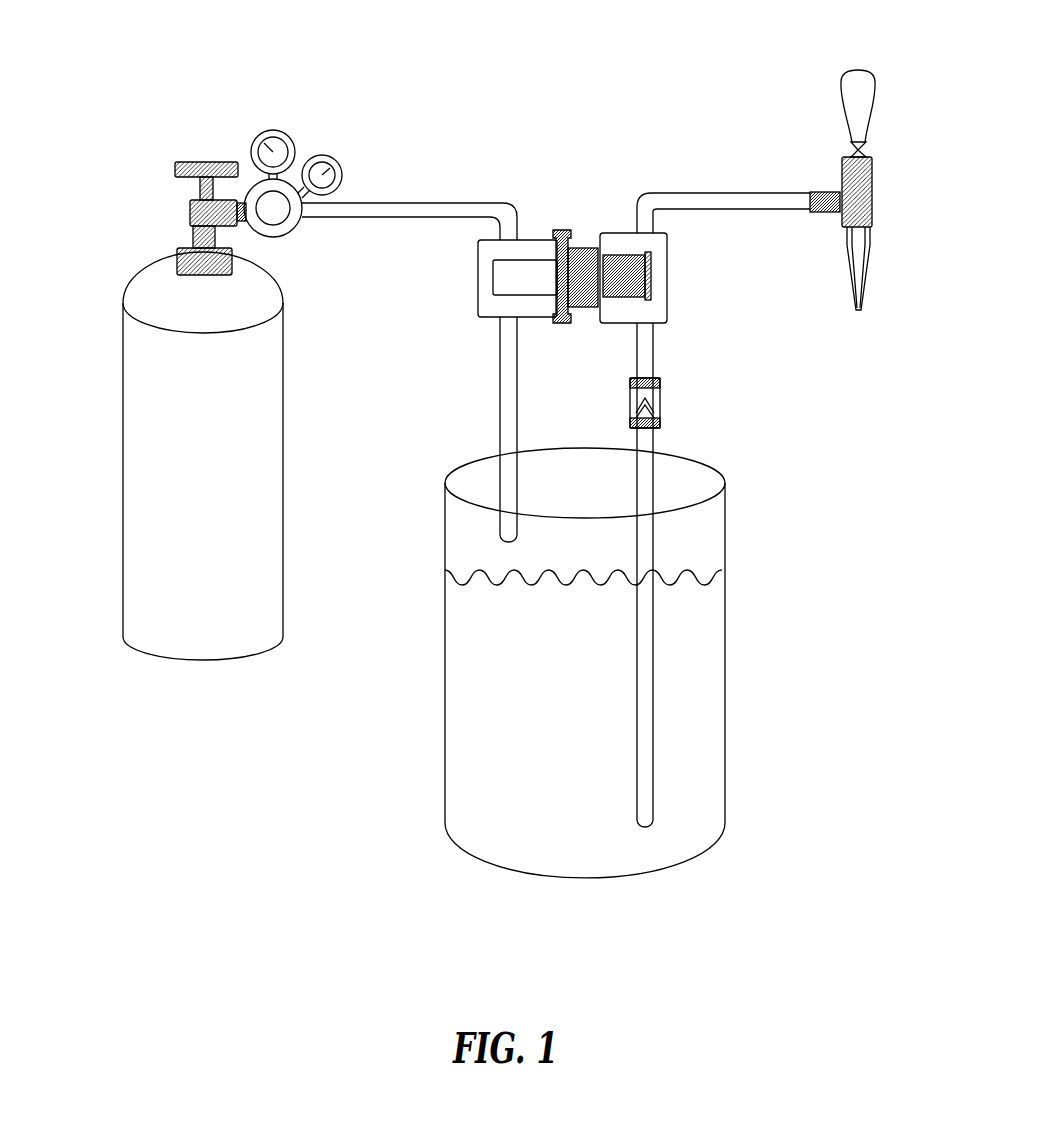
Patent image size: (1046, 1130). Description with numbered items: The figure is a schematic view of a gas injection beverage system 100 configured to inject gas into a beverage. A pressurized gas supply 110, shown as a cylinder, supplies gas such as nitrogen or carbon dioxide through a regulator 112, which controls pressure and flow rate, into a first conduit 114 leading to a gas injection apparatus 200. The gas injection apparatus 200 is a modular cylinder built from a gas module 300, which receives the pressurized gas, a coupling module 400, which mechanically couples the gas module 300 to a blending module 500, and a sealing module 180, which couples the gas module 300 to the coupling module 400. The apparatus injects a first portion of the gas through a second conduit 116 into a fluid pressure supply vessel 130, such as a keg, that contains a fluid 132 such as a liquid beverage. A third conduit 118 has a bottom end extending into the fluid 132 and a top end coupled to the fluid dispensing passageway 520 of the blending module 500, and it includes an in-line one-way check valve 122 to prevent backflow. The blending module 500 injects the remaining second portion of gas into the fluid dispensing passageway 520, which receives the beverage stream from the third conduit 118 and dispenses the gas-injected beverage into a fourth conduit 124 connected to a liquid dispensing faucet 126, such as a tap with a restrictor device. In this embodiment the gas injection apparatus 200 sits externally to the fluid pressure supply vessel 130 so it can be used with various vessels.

The gas injection beverage system 100 is at (96, 91).
The pressurized gas supply 110 is at (183, 450).
The regulator 112 is at (286, 137).
The first conduit 114 is at (403, 205).
The second conduit 116 is at (500, 382).
The third conduit 118 is at (650, 672).
The one-way check valve 122 is at (660, 412).
The fourth conduit 124 is at (718, 203).
The liquid dispensing faucet 126 is at (862, 205).
The fluid pressure supply vessel 130 is at (445, 527).
The fluid 132 is at (543, 701).
The sealing module 180 is at (554, 233).
The gas injection apparatus 200 is at (587, 208).
The gas module 300 is at (478, 270).
The coupling module 400 is at (588, 307).
The blending module 500 is at (688, 279).
The fluid dispensing passageway 520 is at (650, 268).